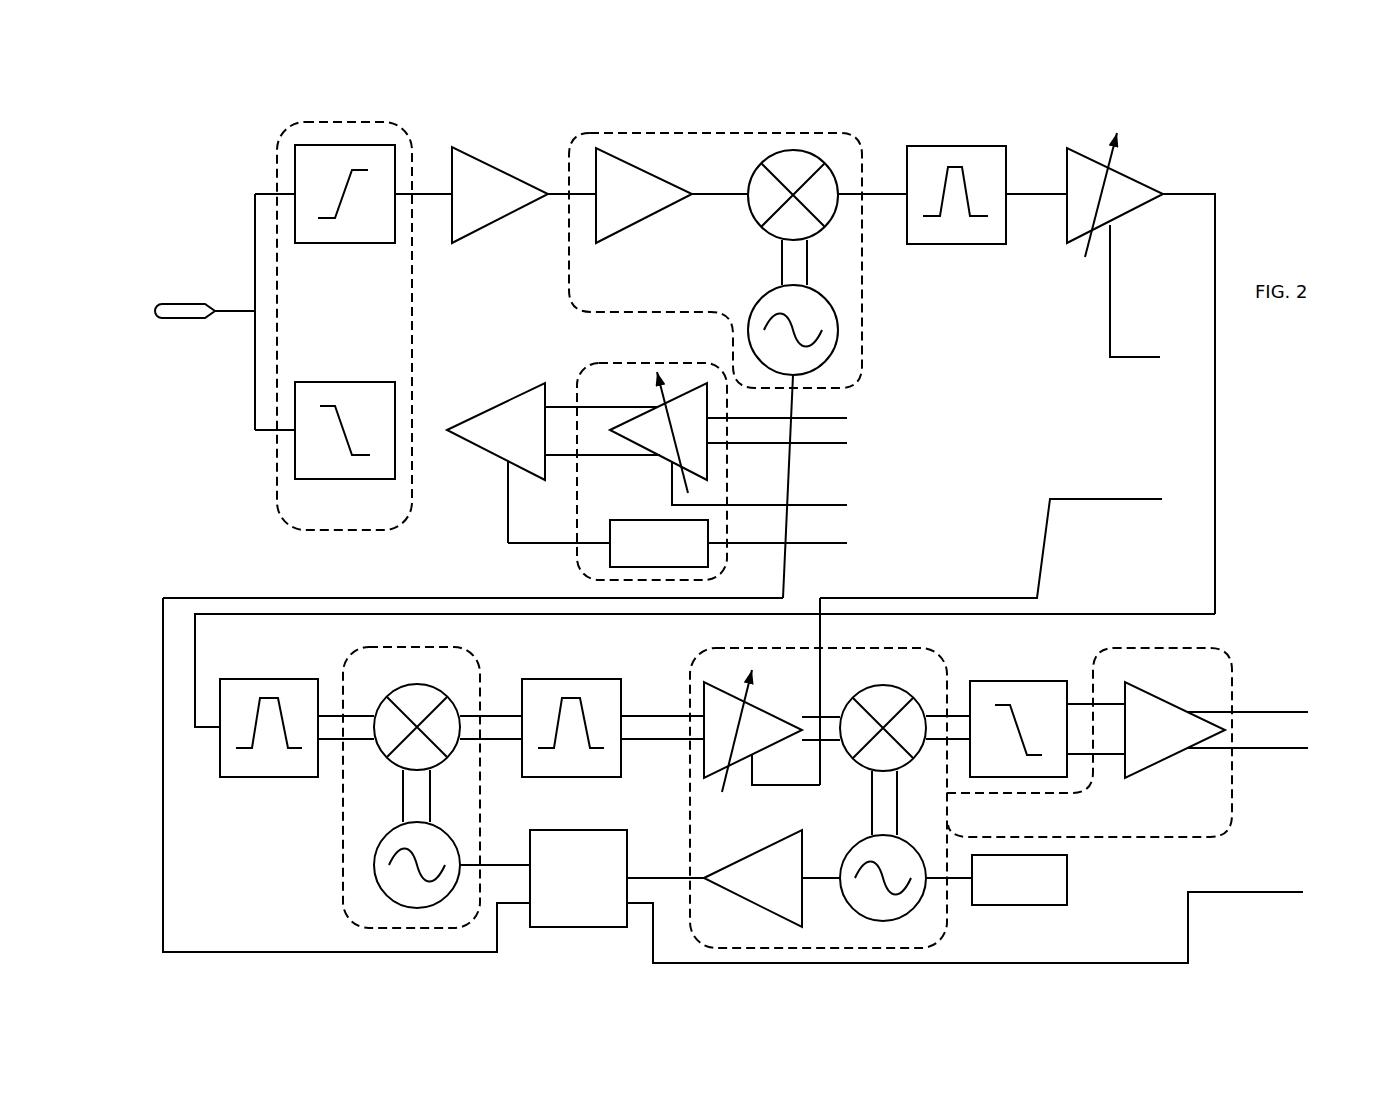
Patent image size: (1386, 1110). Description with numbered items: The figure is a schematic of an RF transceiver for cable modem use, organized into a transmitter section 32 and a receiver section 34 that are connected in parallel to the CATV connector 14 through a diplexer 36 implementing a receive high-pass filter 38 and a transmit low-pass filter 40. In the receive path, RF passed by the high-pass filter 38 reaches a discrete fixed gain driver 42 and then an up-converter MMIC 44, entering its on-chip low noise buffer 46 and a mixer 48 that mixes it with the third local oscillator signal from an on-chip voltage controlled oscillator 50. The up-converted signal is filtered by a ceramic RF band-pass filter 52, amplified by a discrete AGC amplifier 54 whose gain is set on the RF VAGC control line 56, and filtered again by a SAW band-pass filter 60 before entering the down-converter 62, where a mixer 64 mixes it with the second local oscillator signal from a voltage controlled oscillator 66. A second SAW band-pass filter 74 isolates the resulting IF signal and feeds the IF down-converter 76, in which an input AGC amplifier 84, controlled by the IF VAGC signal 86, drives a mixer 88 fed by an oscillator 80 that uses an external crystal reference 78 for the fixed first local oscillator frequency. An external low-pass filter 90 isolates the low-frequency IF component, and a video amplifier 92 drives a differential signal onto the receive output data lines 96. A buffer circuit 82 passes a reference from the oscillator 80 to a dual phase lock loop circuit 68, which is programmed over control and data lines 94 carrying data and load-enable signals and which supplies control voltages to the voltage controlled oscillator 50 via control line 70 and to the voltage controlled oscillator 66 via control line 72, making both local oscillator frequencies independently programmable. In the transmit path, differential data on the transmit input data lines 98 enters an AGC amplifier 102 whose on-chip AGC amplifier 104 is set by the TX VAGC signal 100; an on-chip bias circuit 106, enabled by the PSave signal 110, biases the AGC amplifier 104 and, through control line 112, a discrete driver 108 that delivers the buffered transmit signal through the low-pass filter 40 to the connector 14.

The CATV connector 14 is at (189, 304).
The transmitter section 32 is at (490, 527).
The receiver section 34 is at (1238, 422).
The diplexer 36 is at (349, 331).
The receive high-pass filter 38 is at (373, 242).
The transmit low-pass filter 40 is at (331, 470).
The fixed gain driver 42 is at (510, 173).
The up-converter MMIC 44 is at (675, 275).
The buffer 46 is at (648, 173).
The mixer 48 is at (833, 223).
The voltage controlled oscillator 50 is at (833, 308).
The RF band-pass filter 52 is at (998, 244).
The AGC amplifier 54 is at (1130, 212).
The RF VAGC control line 56 is at (1110, 290).
The SAW band-pass filter 60 is at (313, 776).
The down-converter 62 is at (375, 792).
The mixer 64 is at (440, 683).
The voltage controlled oscillator 66 is at (425, 908).
The dual phase lock loop circuit 68 is at (622, 921).
The control line 70 is at (187, 950).
The control line 72 is at (495, 845).
The second SAW band-pass filter 74 is at (615, 776).
The IF down-converter 76 is at (1068, 824).
The crystal reference 78 is at (1067, 880).
The oscillator 80 is at (898, 915).
The buffer circuit 82 is at (763, 912).
The input AGC amplifier 84 is at (763, 698).
The IF VAGC signal 86 is at (1050, 553).
The mixer 88 is at (902, 690).
The low-pass filter 90 is at (1006, 767).
The video amplifier 92 is at (1165, 758).
The control and data lines 94 is at (1115, 963).
The RX OUT1 and RX OUT2 data lines 96 is at (1262, 712).
The TX IN1 and TX IN2 data lines 98 is at (918, 427).
The TX VAGC signal 100 is at (937, 505).
The AGC amplifier 102 is at (727, 477).
The on-chip AGC amplifier 104 is at (658, 403).
The bias circuit 106 is at (683, 567).
The driver 108 is at (498, 453).
The PSave signal 110 is at (937, 548).
The control line 112 is at (562, 545).